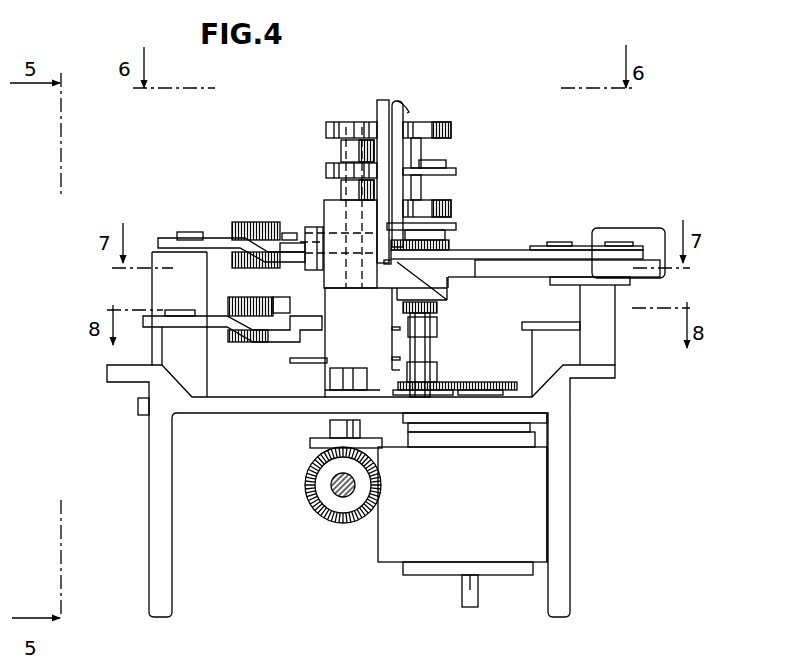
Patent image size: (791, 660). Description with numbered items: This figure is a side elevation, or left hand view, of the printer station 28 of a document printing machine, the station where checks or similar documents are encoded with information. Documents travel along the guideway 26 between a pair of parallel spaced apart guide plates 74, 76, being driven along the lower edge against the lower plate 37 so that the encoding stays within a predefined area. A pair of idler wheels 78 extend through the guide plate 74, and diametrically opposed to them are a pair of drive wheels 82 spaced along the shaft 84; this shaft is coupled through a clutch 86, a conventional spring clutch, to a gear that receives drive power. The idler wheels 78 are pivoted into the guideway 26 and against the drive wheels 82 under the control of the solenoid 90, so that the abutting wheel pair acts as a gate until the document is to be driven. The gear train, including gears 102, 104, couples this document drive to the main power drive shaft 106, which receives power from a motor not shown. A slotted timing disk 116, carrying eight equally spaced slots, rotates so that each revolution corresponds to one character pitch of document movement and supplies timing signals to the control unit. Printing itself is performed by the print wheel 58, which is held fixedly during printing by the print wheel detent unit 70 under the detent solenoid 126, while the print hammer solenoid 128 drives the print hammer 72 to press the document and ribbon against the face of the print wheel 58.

The document guideway 26 is at (390, 102).
The printer station 28 is at (681, 148).
The lower plate 37 is at (447, 300).
The print wheel 58 is at (449, 240).
The print wheel detent unit 70 is at (583, 218).
The print hammer 72 is at (217, 213).
The guide plate 74 is at (409, 110).
The guide plate 76 is at (379, 102).
The idler wheels 78 is at (452, 132).
The drive wheels 82 is at (324, 198).
The shaft 84 is at (334, 122).
The clutch 86 is at (365, 334).
The solenoid 90 is at (253, 352).
The gear 102 is at (310, 448).
The gear 104 is at (303, 478).
The main power drive shaft 106 is at (338, 493).
The slotted timing disk 116 is at (298, 363).
The detent solenoid 126 is at (618, 228).
The print hammer solenoid 128 is at (263, 220).